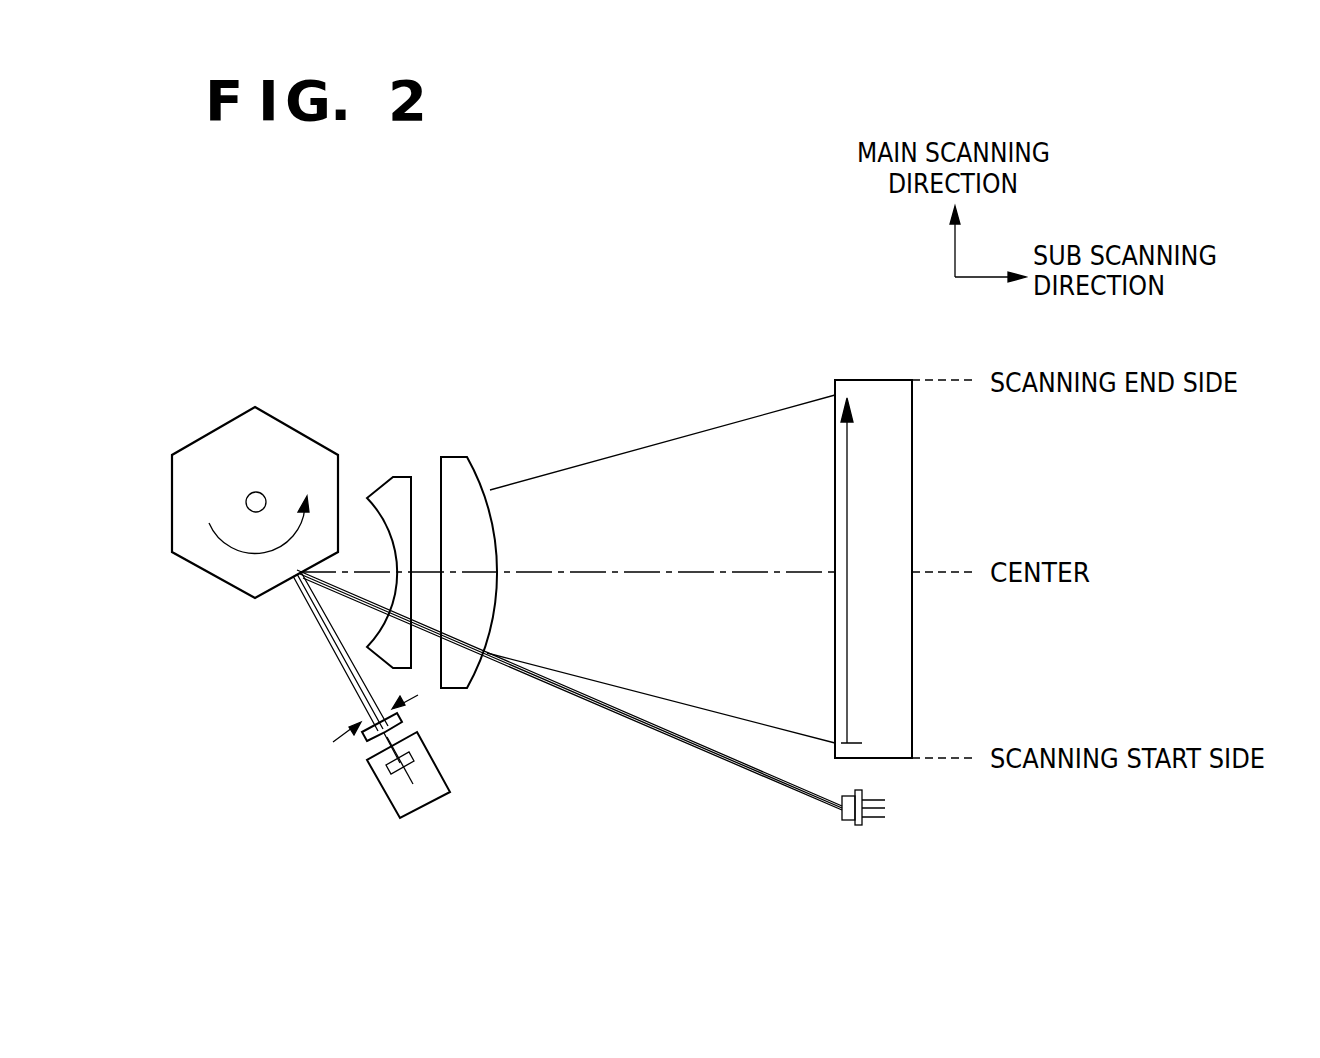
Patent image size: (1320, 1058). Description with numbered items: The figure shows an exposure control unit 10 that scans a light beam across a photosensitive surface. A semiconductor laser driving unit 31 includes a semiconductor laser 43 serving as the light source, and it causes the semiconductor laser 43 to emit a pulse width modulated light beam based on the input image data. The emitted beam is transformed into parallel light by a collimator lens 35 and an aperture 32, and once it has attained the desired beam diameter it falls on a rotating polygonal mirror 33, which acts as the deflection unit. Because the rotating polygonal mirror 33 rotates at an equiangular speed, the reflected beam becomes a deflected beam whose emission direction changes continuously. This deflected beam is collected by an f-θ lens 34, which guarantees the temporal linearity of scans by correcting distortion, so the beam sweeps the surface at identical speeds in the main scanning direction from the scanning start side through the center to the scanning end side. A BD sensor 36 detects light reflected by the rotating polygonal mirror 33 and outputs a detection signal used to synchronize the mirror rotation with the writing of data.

The exposure control unit 10 is at (526, 334).
The semiconductor laser driving unit 31 is at (425, 808).
The aperture 32 is at (335, 741).
The rotating polygonal mirror 33 is at (218, 425).
The f-θ lens 34 is at (502, 458).
The collimator lens 35 is at (365, 737).
The BD sensor 36 is at (848, 822).
The semiconductor laser 43 is at (417, 768).